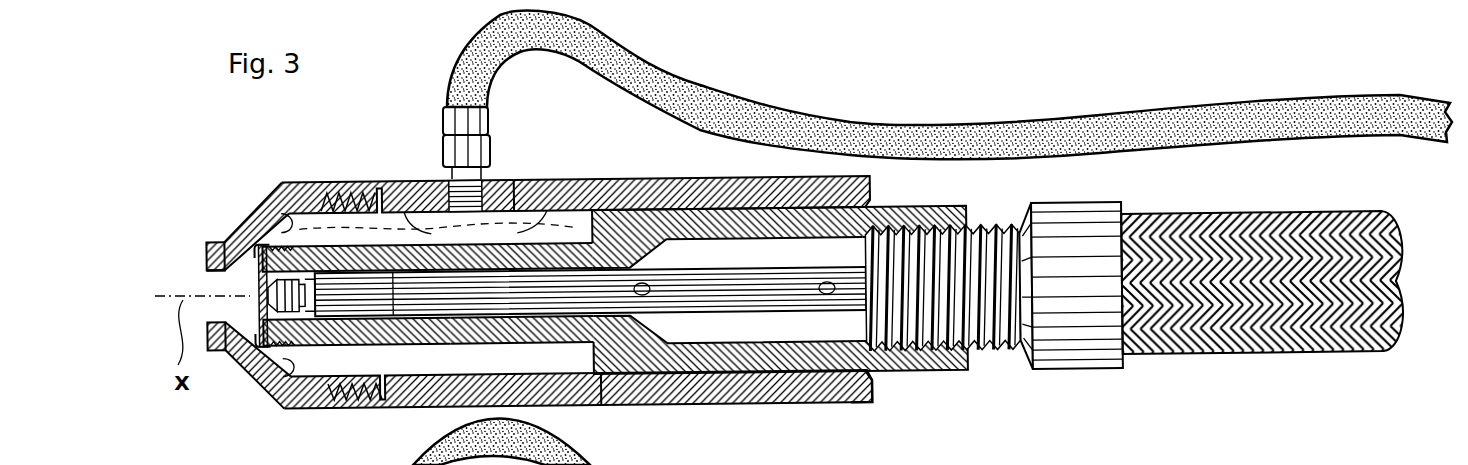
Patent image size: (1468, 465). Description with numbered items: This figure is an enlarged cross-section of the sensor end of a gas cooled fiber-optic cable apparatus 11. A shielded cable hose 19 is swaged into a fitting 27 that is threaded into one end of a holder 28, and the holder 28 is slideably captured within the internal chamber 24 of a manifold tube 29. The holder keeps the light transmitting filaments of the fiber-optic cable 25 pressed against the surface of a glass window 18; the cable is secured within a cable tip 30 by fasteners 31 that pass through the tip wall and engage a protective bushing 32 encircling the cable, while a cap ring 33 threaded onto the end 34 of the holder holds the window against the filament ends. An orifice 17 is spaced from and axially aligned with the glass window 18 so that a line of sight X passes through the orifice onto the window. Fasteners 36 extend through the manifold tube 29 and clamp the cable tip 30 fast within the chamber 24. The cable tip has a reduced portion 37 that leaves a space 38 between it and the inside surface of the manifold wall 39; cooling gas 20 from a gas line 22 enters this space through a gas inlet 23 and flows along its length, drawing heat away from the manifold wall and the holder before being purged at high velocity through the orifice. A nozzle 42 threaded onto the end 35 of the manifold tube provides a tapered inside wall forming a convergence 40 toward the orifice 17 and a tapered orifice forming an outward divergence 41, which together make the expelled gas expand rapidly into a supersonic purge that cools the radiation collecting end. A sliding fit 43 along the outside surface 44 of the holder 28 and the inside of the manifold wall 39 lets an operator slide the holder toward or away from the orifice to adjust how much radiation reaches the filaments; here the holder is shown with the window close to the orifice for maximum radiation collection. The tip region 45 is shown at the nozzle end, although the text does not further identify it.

The cable assembly 11 is at (1094, 73).
The orifice 17 is at (212, 292).
The glass window 18 is at (258, 308).
The shielded cable hose 19 is at (1316, 218).
The cooling gas 20 is at (438, 178).
The gas line 22 is at (748, 112).
The gas inlet 23 is at (486, 125).
The internal chamber 24 is at (474, 363).
The fiber-optic cable 25 is at (716, 312).
The fitting 27 is at (1079, 353).
The holder 28 is at (942, 373).
The manifold tube 29 is at (810, 404).
The cable tip 30 is at (545, 332).
The fasteners 31 is at (410, 243).
The protective bushing 32 is at (374, 322).
The cap ring 33 is at (283, 400).
The end 34 is at (299, 182).
The end 35 is at (348, 182).
The fasteners 36 is at (825, 280).
The reduced portion 37 is at (535, 178).
The space 38 is at (540, 215).
The manifold wall 39 is at (520, 225).
The convergence 40 is at (272, 191).
The divergence 41 is at (206, 270).
The nozzle 42 is at (304, 407).
The sliding fit 43 is at (754, 374).
The outside surface 44 is at (907, 208).
The upper tip 45 is at (224, 241).